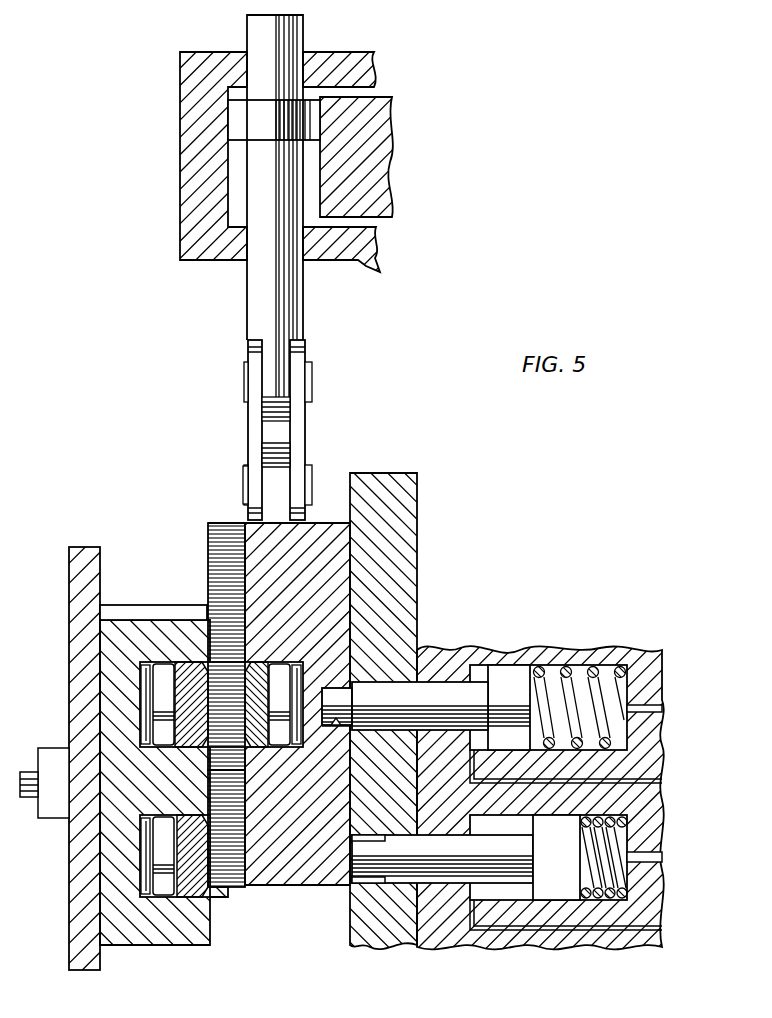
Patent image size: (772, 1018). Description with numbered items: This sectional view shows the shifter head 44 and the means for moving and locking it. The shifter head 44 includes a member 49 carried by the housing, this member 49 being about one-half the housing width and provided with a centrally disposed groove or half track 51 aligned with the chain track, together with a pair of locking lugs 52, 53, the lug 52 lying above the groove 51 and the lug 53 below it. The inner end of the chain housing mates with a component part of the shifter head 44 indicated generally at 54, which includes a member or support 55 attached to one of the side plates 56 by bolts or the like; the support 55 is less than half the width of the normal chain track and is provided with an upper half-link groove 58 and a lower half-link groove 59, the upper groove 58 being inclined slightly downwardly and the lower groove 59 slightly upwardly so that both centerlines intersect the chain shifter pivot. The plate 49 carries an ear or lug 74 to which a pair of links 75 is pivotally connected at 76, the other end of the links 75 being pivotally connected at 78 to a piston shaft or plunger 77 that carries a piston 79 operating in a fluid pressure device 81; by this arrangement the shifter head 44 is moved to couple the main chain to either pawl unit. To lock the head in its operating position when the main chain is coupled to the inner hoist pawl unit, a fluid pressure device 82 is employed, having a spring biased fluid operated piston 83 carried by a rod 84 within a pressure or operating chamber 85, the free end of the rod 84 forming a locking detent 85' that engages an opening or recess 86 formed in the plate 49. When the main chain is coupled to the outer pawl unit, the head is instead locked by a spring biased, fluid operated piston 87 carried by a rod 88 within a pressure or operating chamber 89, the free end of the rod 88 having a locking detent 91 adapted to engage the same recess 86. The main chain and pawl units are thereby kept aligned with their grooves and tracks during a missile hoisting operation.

The shifter head 44 is at (330, 503).
The member 49 is at (312, 886).
The groove or half track 51 is at (250, 668).
The locking lug 52 is at (215, 535).
The locking lug 53 is at (233, 890).
The component part of the shifter head 54 is at (188, 600).
The member or support 55 is at (110, 716).
The side plate 56 is at (70, 578).
The upper half-link groove 58 is at (157, 666).
The lower half-link groove 59 is at (152, 820).
The ear or lug 74 is at (278, 456).
The links 75 is at (298, 417).
The pivot connection 76 is at (246, 480).
The piston shaft or plunger 77 is at (296, 292).
The pivot connection 78 is at (307, 365).
The piston 79 is at (237, 124).
The fluid pressure device 81 is at (185, 195).
The fluid pressure device 82 is at (455, 648).
The spring biased fluid operated piston 83 is at (513, 675).
The rod 84 is at (432, 722).
The pressure or operating chamber 85 is at (597, 708).
The locking detent 85' is at (334, 690).
The opening or recess 86 is at (337, 728).
The spring biased fluid operated piston 87 is at (565, 824).
The rod 88 is at (466, 859).
The pressure or operating chamber 89 is at (503, 898).
The locking detent 91 is at (370, 874).